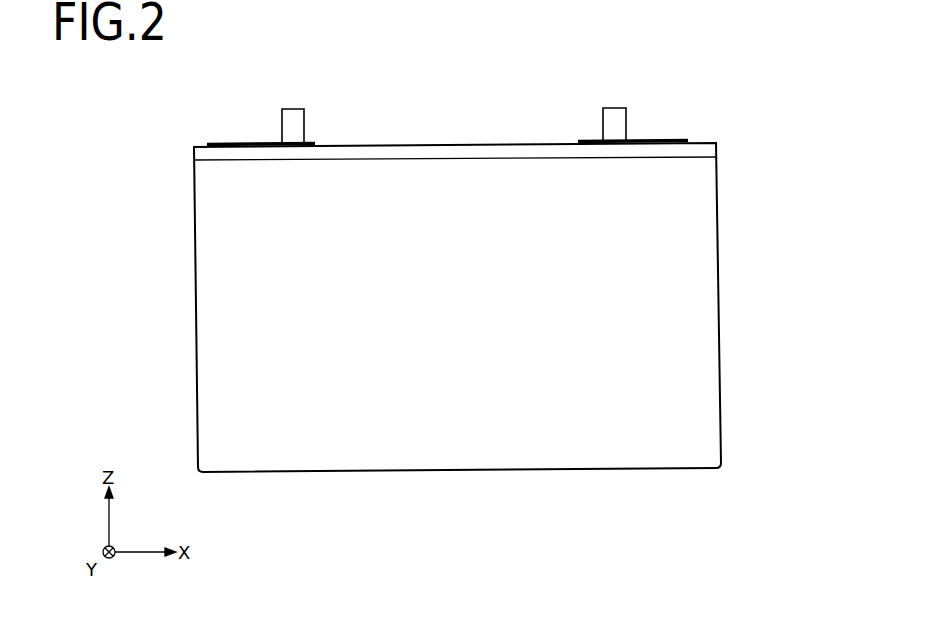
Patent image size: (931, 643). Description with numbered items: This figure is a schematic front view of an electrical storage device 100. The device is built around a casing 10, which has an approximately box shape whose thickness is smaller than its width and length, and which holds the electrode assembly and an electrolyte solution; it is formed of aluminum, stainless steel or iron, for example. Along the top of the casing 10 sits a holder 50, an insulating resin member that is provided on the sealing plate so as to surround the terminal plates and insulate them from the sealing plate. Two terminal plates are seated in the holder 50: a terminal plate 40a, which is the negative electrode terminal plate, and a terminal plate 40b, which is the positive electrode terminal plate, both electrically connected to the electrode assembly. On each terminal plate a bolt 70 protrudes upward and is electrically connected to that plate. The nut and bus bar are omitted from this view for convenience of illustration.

The casing 10 is at (228, 306).
The holder 50 is at (207, 156).
The terminal plate 40a is at (241, 143).
The terminal plate 40b is at (667, 140).
The bolt 70 is at (293, 122).
The electrical storage device 100 is at (752, 110).